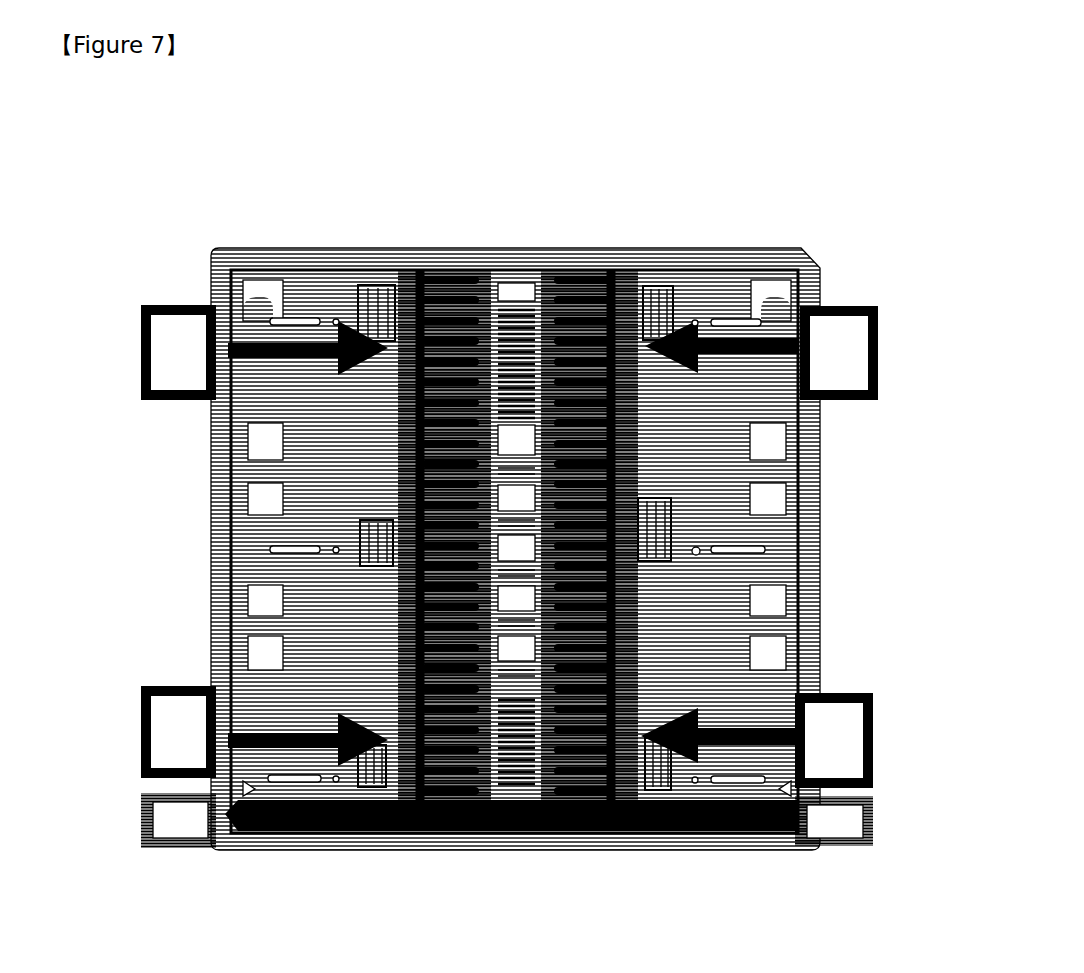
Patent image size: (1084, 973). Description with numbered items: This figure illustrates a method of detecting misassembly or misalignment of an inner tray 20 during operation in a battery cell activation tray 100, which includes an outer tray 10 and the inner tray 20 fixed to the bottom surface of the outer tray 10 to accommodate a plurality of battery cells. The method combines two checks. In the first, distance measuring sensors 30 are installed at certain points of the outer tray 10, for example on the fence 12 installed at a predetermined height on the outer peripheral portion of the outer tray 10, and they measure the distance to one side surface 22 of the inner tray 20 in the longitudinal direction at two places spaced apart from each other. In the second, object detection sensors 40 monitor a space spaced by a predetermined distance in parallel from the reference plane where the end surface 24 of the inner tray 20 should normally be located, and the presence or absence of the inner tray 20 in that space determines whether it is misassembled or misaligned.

The battery cell activation tray 100 is at (512, 204).
The outer tray 10 is at (824, 483).
The fence of outer tray 12 is at (794, 449).
The inner tray 20 is at (690, 611).
The one side surface of inner tray in longitudinal direction 22 is at (631, 688).
The end surface of inner tray in longitudinal direction 24 is at (772, 538).
The distance measuring sensor 30 is at (170, 393).
The object detection sensor 40 is at (180, 842).